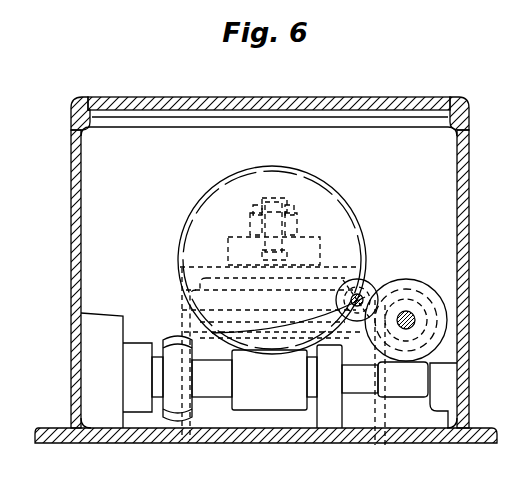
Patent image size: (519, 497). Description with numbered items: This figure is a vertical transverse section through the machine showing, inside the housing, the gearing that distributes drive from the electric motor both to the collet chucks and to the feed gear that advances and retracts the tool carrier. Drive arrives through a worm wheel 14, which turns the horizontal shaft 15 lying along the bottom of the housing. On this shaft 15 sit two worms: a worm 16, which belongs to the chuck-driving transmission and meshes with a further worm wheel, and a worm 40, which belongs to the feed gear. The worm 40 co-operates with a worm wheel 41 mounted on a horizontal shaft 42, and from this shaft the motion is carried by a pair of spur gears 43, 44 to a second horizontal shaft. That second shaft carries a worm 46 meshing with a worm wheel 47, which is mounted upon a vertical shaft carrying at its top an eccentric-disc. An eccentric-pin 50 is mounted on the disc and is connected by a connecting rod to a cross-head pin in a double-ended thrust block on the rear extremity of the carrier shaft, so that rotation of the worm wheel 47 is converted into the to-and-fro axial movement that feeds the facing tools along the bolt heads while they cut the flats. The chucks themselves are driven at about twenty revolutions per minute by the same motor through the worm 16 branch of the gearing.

The worm wheel 14 is at (175, 402).
The horizontal shaft 15 is at (208, 388).
The worm 16 is at (280, 406).
The worm 40 is at (402, 396).
The worm wheel 41 is at (452, 323).
The horizontal shaft 42 is at (411, 318).
The spur gear 43 is at (416, 290).
The spur gear 44 is at (366, 284).
The worm 46 is at (343, 292).
The worm wheel 47 is at (349, 207).
The eccentric-pin 50 is at (292, 203).